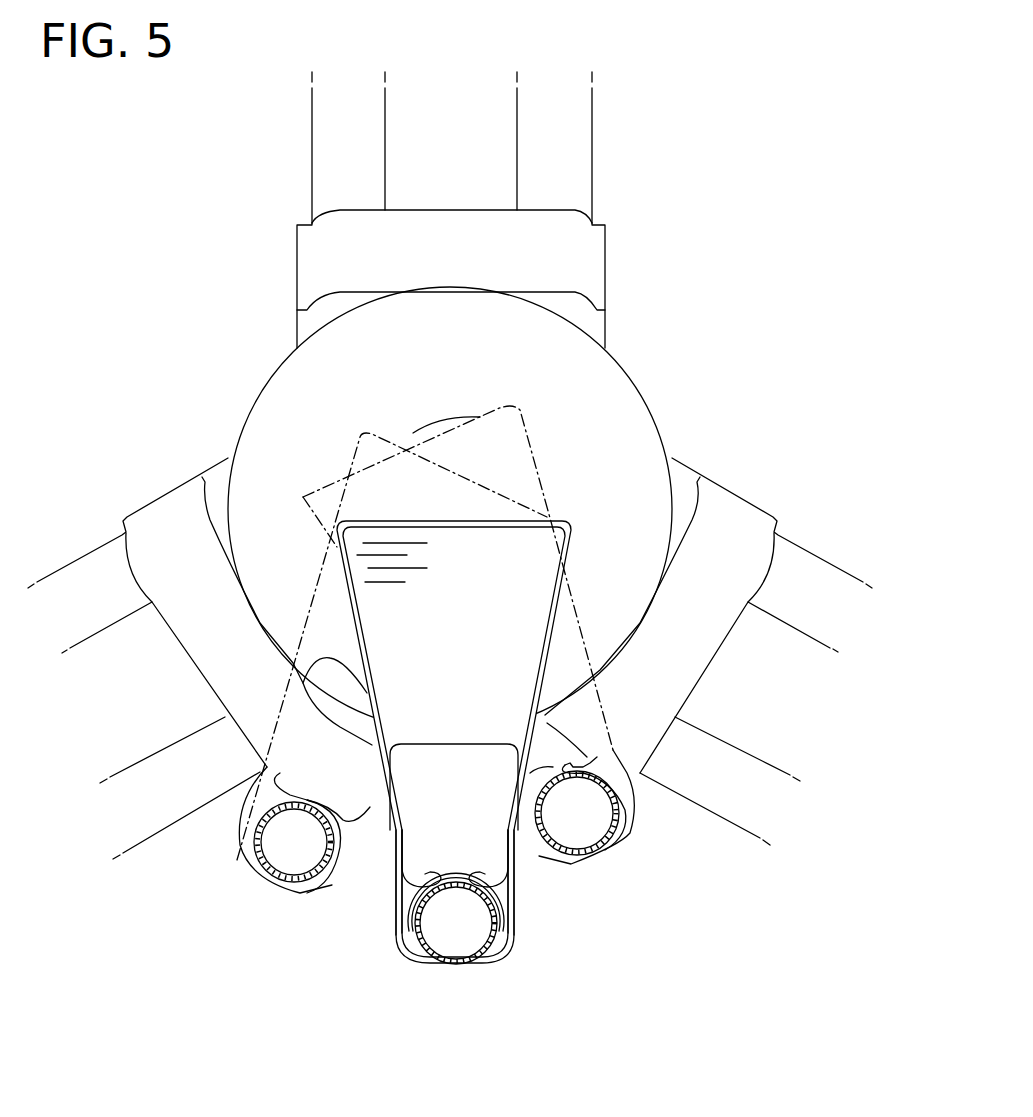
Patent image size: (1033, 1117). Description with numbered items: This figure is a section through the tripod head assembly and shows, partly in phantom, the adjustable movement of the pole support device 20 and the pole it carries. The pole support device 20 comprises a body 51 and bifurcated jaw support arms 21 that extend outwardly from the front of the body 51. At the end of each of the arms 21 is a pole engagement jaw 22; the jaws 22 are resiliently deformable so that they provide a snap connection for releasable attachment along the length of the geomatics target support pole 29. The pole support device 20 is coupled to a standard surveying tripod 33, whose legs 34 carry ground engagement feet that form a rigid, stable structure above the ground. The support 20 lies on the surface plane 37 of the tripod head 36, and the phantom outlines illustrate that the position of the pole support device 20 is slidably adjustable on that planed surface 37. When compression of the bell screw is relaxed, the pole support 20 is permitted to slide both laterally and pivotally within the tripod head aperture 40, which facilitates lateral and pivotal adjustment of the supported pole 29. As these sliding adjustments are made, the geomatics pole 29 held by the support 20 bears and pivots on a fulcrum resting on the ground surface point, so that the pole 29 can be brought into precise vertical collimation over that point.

The pole support device 20 is at (576, 501).
The jaw support arms 21 is at (387, 855).
The pole engagement jaws 22 is at (395, 885).
The geomatics target support pole 29 is at (269, 879).
The surveying tripod 33 is at (605, 207).
The legs 34 is at (605, 267).
The tripod head 36 is at (235, 428).
The surface plane 37 is at (603, 383).
The tripod head aperture 40 is at (420, 435).
The body 51 is at (422, 622).